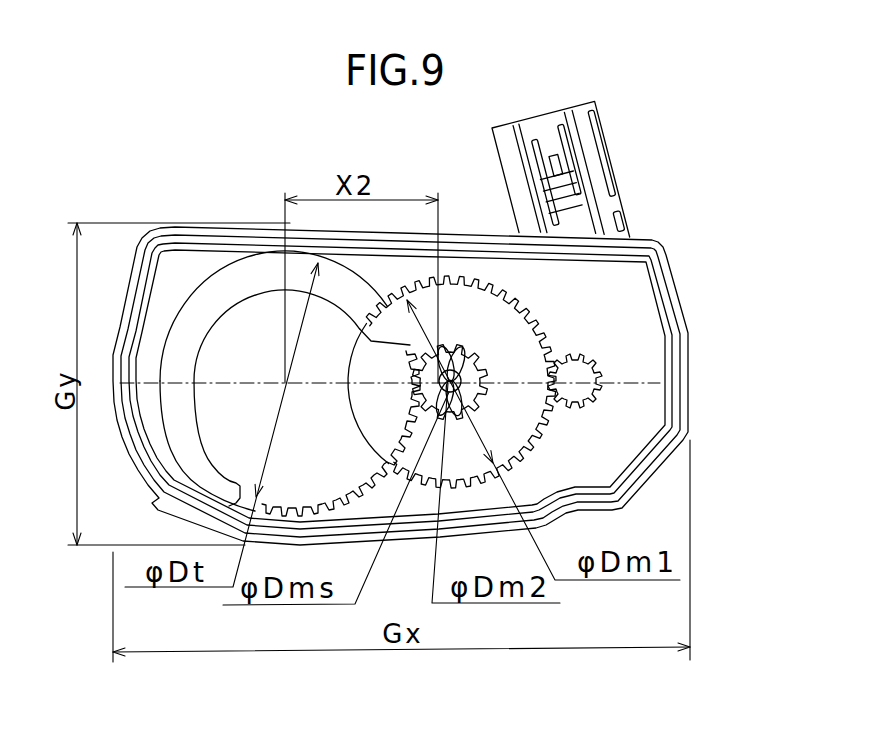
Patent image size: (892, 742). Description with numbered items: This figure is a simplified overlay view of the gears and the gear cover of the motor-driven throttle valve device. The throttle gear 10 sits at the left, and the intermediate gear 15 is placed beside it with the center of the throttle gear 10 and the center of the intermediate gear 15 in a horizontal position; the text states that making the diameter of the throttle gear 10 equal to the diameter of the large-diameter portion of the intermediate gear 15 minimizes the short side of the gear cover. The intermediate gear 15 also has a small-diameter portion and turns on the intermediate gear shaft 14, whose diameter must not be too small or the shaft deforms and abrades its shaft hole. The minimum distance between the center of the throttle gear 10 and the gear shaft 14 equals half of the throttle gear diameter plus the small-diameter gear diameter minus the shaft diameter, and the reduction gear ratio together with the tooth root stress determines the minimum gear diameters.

The throttle gear 10 is at (257, 330).
The intermediate gear shaft 14 is at (445, 393).
The intermediate gear 15 is at (513, 367).